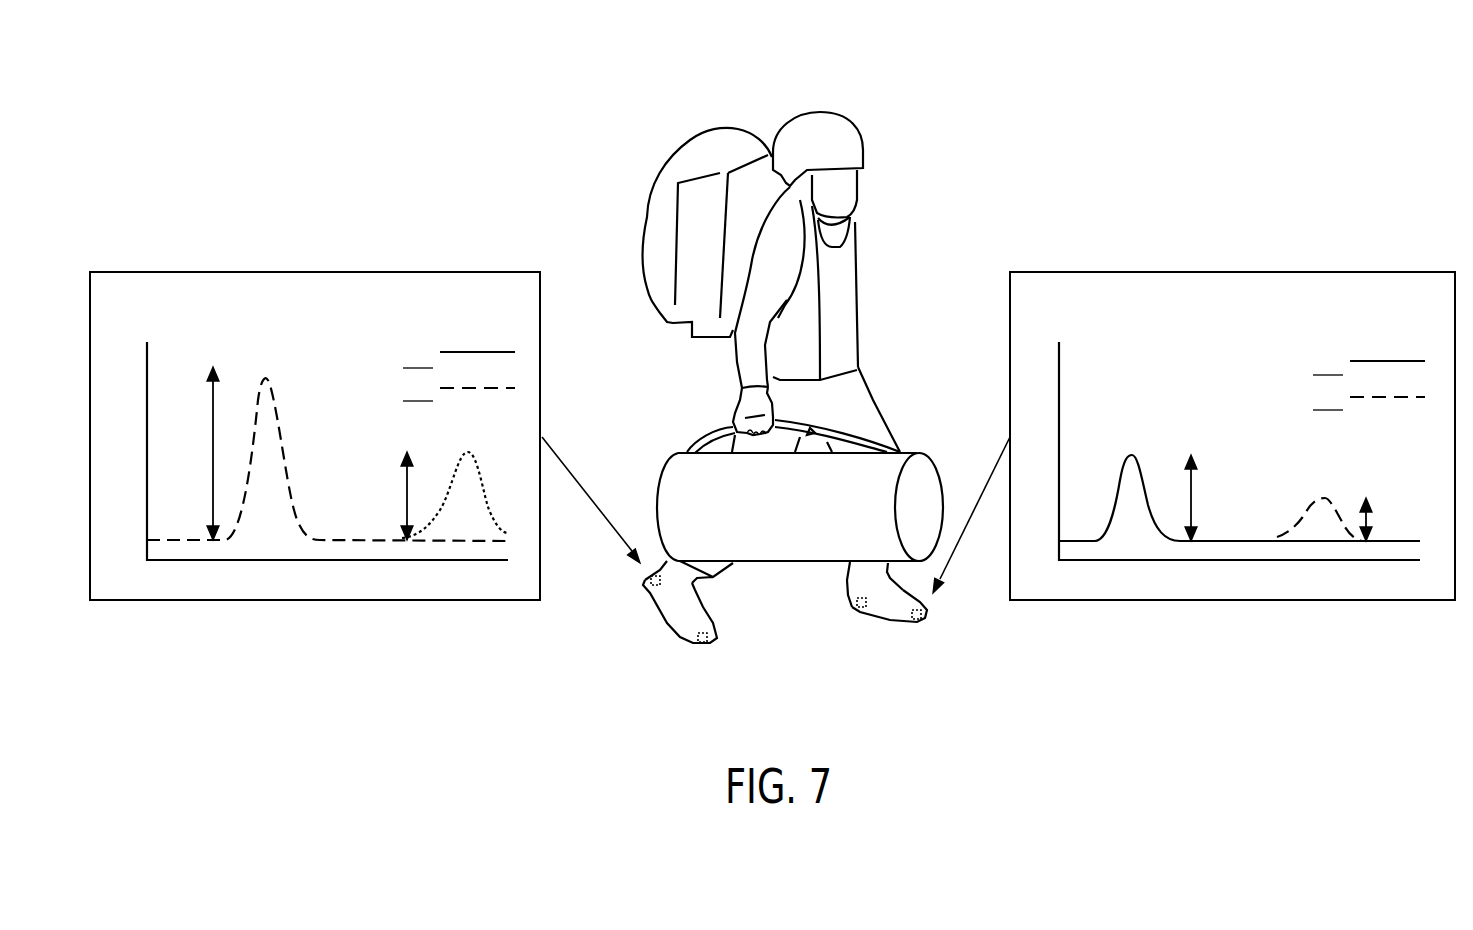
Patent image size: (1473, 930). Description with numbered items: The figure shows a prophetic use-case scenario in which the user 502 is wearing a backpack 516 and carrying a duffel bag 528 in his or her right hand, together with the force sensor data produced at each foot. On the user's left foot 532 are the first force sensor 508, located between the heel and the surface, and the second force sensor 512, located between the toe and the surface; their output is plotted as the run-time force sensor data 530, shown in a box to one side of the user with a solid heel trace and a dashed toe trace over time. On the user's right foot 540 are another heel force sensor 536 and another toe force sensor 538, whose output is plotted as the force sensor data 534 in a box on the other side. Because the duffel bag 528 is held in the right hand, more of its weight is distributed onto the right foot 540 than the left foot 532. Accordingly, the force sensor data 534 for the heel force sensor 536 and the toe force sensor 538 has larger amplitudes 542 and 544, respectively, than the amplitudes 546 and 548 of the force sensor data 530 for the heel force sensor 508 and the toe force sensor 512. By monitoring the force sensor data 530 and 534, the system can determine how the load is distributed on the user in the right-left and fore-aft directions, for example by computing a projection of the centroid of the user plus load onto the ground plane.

The user 502 is at (772, 84).
The backpack 516 is at (657, 313).
The duffel bag 528 is at (777, 565).
The right foot 540 is at (670, 654).
The heel force sensor 536 is at (647, 586).
The toe force sensor 538 is at (716, 641).
The left foot 532 is at (882, 633).
The first force sensor 508 is at (848, 613).
The second force sensor 512 is at (925, 618).
The force sensor data 534 is at (492, 327).
The force sensor data 530 is at (1445, 316).
The amplitude 542 is at (213, 443).
The amplitude 544 is at (407, 495).
The amplitude 546 is at (1191, 505).
The amplitude 548 is at (1366, 520).